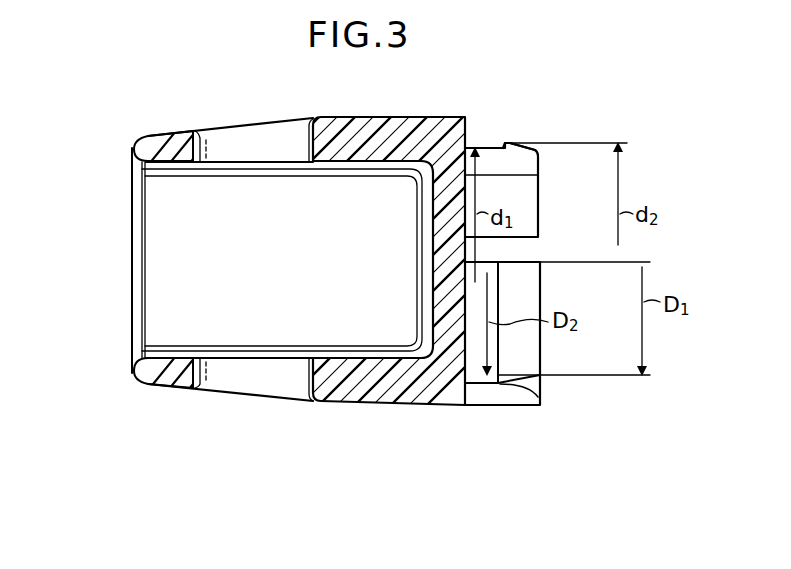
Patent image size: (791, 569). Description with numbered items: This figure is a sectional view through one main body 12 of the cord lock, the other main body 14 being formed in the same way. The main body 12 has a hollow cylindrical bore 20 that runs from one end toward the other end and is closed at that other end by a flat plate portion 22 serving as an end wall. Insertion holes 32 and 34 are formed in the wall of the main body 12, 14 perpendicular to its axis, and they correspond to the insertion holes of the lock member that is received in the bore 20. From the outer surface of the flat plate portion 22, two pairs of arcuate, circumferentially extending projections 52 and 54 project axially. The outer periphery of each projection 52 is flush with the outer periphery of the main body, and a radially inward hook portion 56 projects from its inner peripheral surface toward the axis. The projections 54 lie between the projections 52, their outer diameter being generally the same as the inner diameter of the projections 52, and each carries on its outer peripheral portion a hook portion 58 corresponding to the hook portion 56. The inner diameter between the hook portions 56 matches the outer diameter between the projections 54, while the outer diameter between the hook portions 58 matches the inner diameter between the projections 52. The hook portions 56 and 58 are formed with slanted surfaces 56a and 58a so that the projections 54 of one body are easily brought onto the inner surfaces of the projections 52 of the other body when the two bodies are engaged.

The main body 12 is at (395, 250).
The main body 14 is at (446, 118).
The bore 20 is at (192, 269).
The flat plate portion 22 is at (432, 262).
The insertion hole 32 is at (226, 131).
The insertion hole 34 is at (245, 392).
The projection 52 is at (530, 360).
The projection 54 is at (535, 175).
The hook portion 56 is at (505, 381).
The inclined surface 56a is at (534, 386).
The hook portion 58 is at (505, 144).
The inclined surface 58a is at (535, 149).